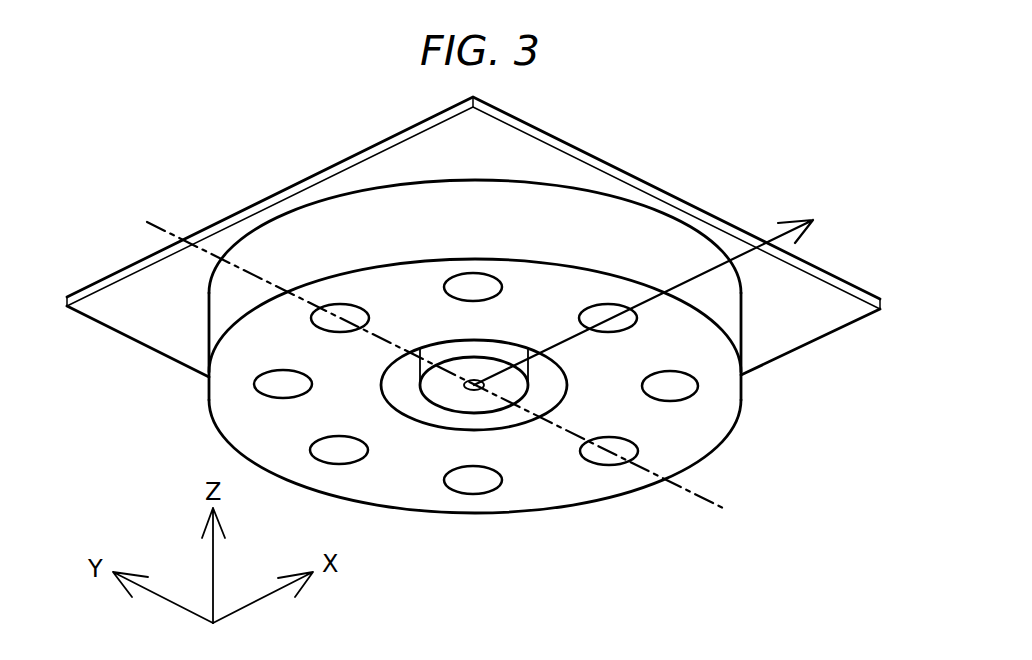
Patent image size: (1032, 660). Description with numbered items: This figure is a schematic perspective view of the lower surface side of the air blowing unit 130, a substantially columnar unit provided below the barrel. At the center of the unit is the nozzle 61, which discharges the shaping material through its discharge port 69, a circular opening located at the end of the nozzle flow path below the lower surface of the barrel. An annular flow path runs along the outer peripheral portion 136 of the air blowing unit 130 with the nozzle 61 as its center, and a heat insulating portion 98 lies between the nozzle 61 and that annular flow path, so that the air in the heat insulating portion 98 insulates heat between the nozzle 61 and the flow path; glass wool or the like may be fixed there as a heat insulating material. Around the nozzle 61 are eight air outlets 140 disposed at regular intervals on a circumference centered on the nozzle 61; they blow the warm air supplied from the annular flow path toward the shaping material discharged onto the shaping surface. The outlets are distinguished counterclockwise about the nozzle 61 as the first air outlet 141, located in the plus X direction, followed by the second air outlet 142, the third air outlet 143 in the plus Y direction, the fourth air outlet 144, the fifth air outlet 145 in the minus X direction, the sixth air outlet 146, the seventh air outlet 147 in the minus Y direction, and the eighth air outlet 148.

The air blowing unit 130 is at (757, 563).
The outer peripheral portion 136 is at (715, 307).
The air outlets 140 is at (499, 350).
The first air outlet 141 is at (608, 318).
The second air outlet 142 is at (472, 287).
The third air outlet 143 is at (342, 318).
The fourth air outlet 144 is at (285, 382).
The fifth air outlet 145 is at (335, 457).
The sixth air outlet 146 is at (473, 478).
The seventh air outlet 147 is at (605, 457).
The eighth air outlet 148 is at (667, 392).
The nozzle 61 is at (475, 365).
The discharge port 69 is at (463, 380).
The heat insulating portion 98 is at (515, 417).